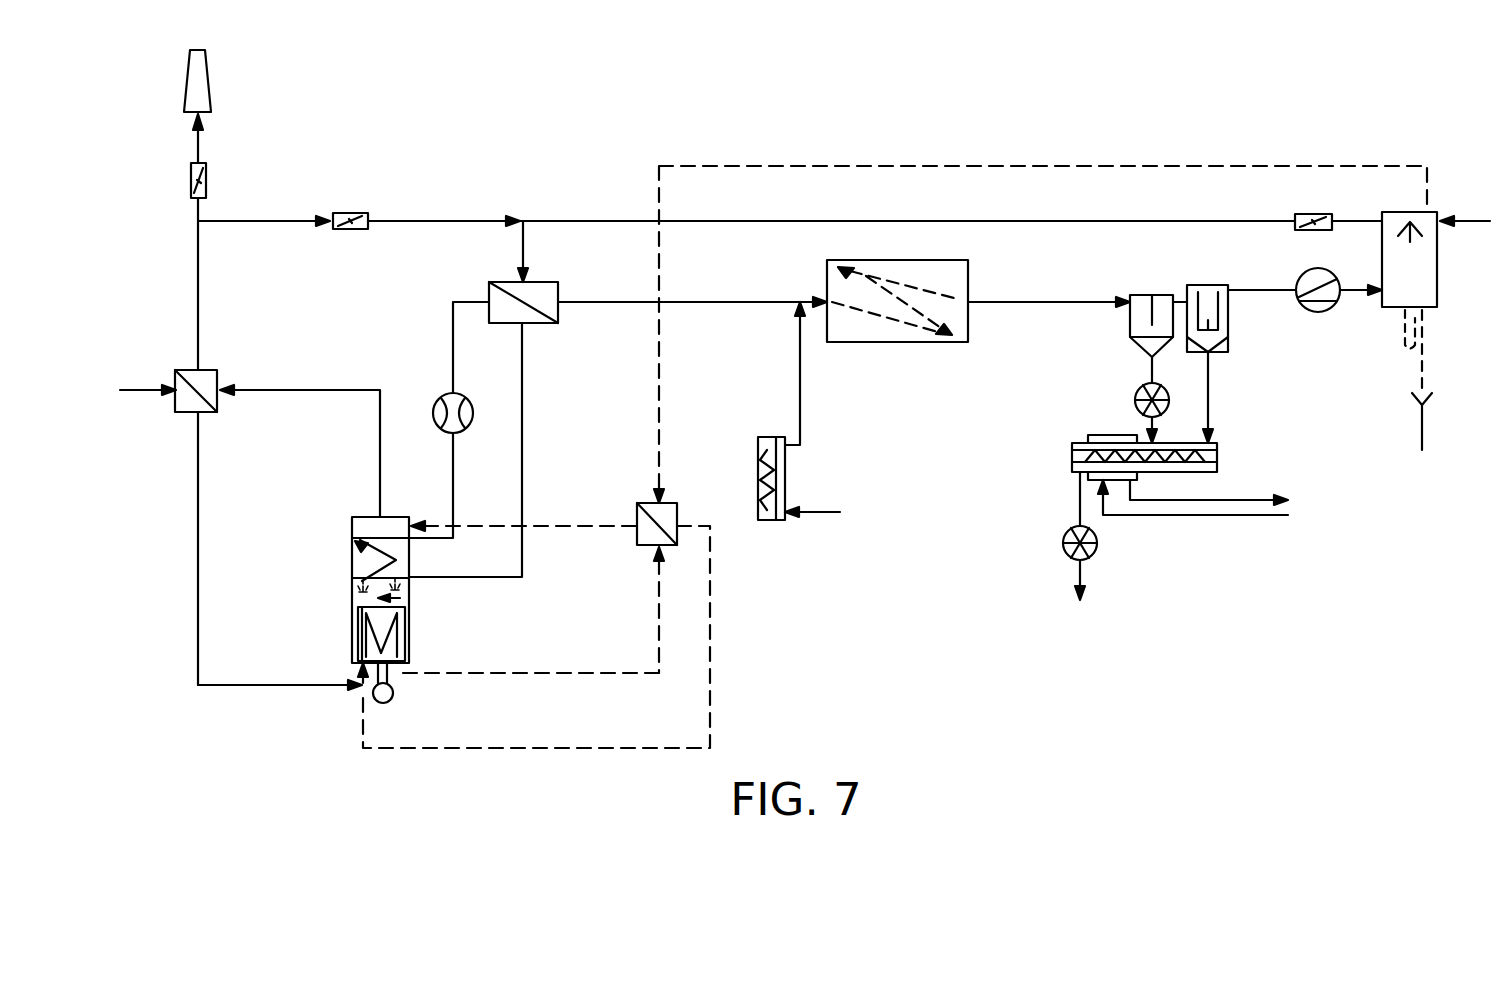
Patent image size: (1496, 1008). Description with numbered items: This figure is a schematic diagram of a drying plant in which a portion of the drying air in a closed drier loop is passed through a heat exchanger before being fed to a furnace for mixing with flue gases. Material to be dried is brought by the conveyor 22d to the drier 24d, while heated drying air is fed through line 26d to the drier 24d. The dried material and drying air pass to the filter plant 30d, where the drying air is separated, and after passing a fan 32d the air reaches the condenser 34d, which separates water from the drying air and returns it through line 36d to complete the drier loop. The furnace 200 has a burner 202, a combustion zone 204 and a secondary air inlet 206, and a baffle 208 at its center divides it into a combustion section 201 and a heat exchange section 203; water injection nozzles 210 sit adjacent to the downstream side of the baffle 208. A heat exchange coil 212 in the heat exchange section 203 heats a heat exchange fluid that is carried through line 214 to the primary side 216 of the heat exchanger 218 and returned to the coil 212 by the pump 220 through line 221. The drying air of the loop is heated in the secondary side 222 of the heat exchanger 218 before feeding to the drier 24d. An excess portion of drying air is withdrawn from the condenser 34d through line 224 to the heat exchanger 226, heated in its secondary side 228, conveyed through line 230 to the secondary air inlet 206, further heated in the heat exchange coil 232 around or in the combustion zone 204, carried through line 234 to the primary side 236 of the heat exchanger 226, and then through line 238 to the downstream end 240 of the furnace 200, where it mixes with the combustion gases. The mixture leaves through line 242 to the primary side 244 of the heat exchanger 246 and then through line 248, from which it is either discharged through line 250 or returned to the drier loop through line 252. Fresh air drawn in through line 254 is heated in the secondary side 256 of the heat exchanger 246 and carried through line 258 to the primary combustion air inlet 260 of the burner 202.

The furnace 200 is at (340, 580).
The combustion section 201 is at (405, 599).
The burner 202 is at (393, 697).
The heat exchange section 203 is at (358, 540).
The combustion zone 204 is at (378, 613).
The secondary air inlet 206 is at (356, 670).
The baffle 208 is at (355, 600).
The water injection nozzles 210 is at (362, 588).
The heat exchange coil 212 is at (400, 570).
The line 214 is at (522, 468).
The primary side 216 is at (527, 314).
The heat exchanger 218 is at (540, 280).
The pump 220 is at (440, 405).
The line 221 is at (450, 303).
The secondary side 222 is at (542, 295).
The line 224 is at (930, 165).
The heat exchanger 226 is at (647, 503).
The secondary side 228 is at (668, 503).
The line 230 is at (712, 625).
The heat exchange coil 232 is at (390, 633).
The line 234 is at (563, 673).
The primary side 236 is at (645, 545).
The line 238 is at (558, 527).
The downstream end 240 is at (366, 517).
The line 242 is at (345, 390).
The primary side 244 is at (205, 375).
The heat exchanger 246 is at (203, 380).
The line 248 is at (200, 274).
The line 250 is at (200, 148).
The line 252 is at (285, 221).
The line 254 is at (157, 385).
The secondary side 256 is at (180, 408).
The line 258 is at (198, 600).
The primary combustion air inlet 260 is at (355, 686).
The conveyor 22d is at (787, 477).
The drier 24d is at (917, 342).
The line 26d is at (742, 302).
The filter plant 30d is at (1163, 595).
The fan 32d is at (1316, 312).
The condenser 34d is at (1438, 277).
The line 36d is at (1050, 221).